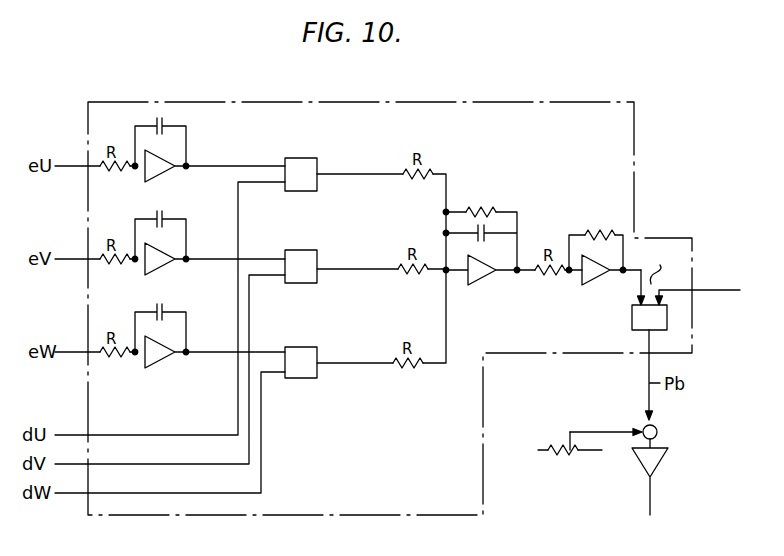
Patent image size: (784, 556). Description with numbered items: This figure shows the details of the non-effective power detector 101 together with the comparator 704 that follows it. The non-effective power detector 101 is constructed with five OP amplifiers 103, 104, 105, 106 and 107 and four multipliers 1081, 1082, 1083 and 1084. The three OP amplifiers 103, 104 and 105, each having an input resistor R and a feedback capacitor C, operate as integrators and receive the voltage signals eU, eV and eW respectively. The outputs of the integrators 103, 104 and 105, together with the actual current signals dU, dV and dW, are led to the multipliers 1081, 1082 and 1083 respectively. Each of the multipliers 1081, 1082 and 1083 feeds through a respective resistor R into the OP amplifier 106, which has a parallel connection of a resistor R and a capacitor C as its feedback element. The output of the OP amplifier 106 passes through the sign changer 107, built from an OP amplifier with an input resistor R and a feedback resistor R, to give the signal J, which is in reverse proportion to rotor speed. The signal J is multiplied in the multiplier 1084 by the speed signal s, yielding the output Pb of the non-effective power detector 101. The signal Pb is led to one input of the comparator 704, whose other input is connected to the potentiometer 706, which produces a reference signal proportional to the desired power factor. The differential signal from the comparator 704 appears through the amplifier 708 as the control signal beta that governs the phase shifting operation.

The non-effective power detector 101 is at (332, 101).
The OP amplifier 103 is at (163, 176).
The OP amplifier 104 is at (163, 269).
The OP amplifier 105 is at (163, 362).
The OP amplifier 106 is at (487, 280).
The sign changer 107 is at (598, 283).
The multiplier 1081 is at (312, 191).
The multiplier 1082 is at (312, 283).
The multiplier 1083 is at (312, 378).
The multiplier 1084 is at (632, 326).
The comparator 704 is at (658, 436).
The potentiometer 706 is at (582, 454).
The amplifier 708 is at (645, 472).